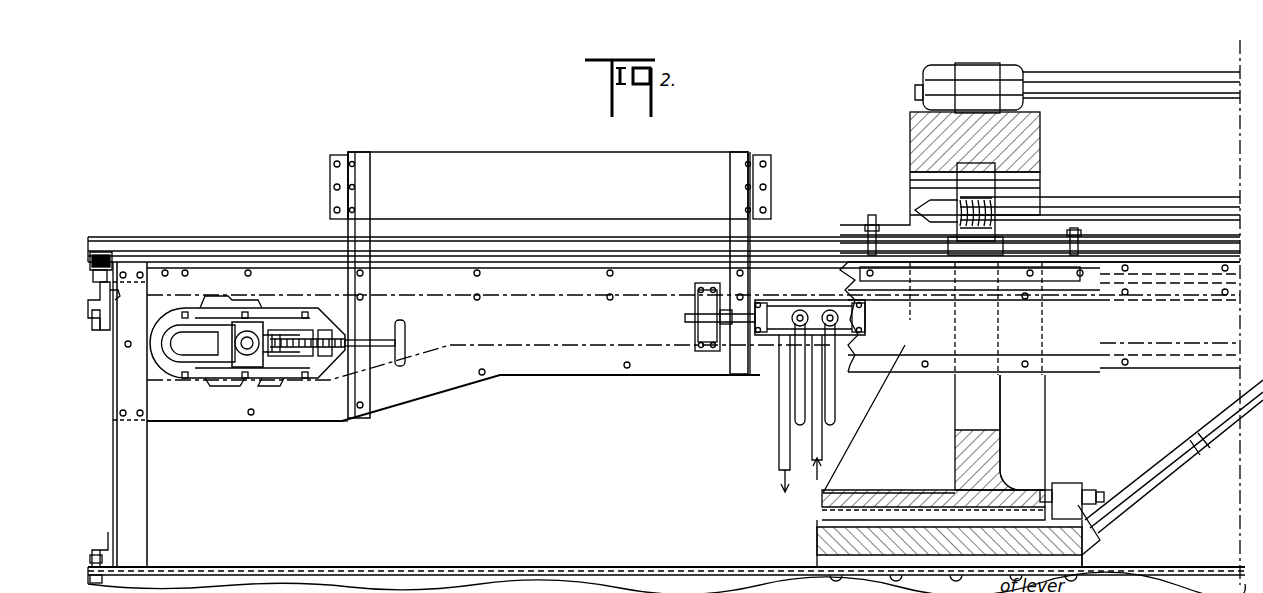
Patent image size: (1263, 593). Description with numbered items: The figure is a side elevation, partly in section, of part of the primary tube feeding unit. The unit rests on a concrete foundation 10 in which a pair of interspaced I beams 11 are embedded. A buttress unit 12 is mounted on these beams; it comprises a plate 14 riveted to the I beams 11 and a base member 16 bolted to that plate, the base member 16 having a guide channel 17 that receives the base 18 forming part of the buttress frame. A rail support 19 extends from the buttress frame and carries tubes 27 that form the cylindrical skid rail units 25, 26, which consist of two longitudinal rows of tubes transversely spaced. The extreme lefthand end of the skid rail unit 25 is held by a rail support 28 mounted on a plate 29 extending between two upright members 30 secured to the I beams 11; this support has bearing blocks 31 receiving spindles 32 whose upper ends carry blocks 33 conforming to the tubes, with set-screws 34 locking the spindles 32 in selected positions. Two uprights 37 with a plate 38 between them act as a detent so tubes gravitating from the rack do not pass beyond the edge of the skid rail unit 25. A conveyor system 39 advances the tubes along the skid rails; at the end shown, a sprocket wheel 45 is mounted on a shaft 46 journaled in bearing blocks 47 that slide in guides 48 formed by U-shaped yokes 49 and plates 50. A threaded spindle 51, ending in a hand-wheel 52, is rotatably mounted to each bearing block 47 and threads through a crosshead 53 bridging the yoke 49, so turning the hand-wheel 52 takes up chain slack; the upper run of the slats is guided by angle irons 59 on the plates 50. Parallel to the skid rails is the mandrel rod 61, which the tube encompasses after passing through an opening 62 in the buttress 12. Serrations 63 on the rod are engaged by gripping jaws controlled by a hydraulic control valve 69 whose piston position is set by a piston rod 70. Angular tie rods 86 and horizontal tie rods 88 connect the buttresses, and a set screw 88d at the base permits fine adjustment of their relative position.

The foundation 10 is at (218, 580).
The I beams 11 is at (300, 558).
The buttress unit 12 is at (889, 419).
The plate 14 is at (1085, 553).
The base member 16 is at (820, 540).
The guide channel 17 is at (823, 505).
The base 18 is at (985, 463).
The rail support 19 is at (1040, 215).
The skid rail unit 25 is at (540, 260).
The skid rail unit 26 is at (1180, 260).
The tube 27 is at (290, 247).
The rail support 28 is at (98, 243).
The plate 29 is at (126, 306).
The upright member 30 is at (138, 487).
The bearing block 31 is at (129, 333).
The spindle 32 is at (120, 283).
The block 33 is at (105, 262).
The set-screw 34 is at (96, 330).
The upright 37 is at (372, 181).
The plate 38 is at (481, 160).
The conveyor system 39 is at (521, 298).
The sprocket wheel 45 is at (232, 297).
The shaft 46 is at (245, 356).
The bearing block 47 is at (237, 358).
The guide 48 is at (199, 343).
The U-shaped yoke 49 is at (296, 380).
The plate 50 is at (336, 410).
The threaded spindle 51 is at (386, 340).
The hand-wheel 52 is at (405, 343).
The crosshead 53 is at (328, 320).
The angle irons 59 is at (588, 348).
The mandrel rod 61 is at (1172, 193).
The opening 62 is at (918, 190).
The serrations 63 is at (985, 205).
The hydraulic control valve 69 is at (782, 305).
The piston rod 70 is at (742, 325).
The angular tie rod 86 is at (1205, 450).
The tie rod 88 is at (1146, 88).
The pivot bolt 88d is at (1080, 490).